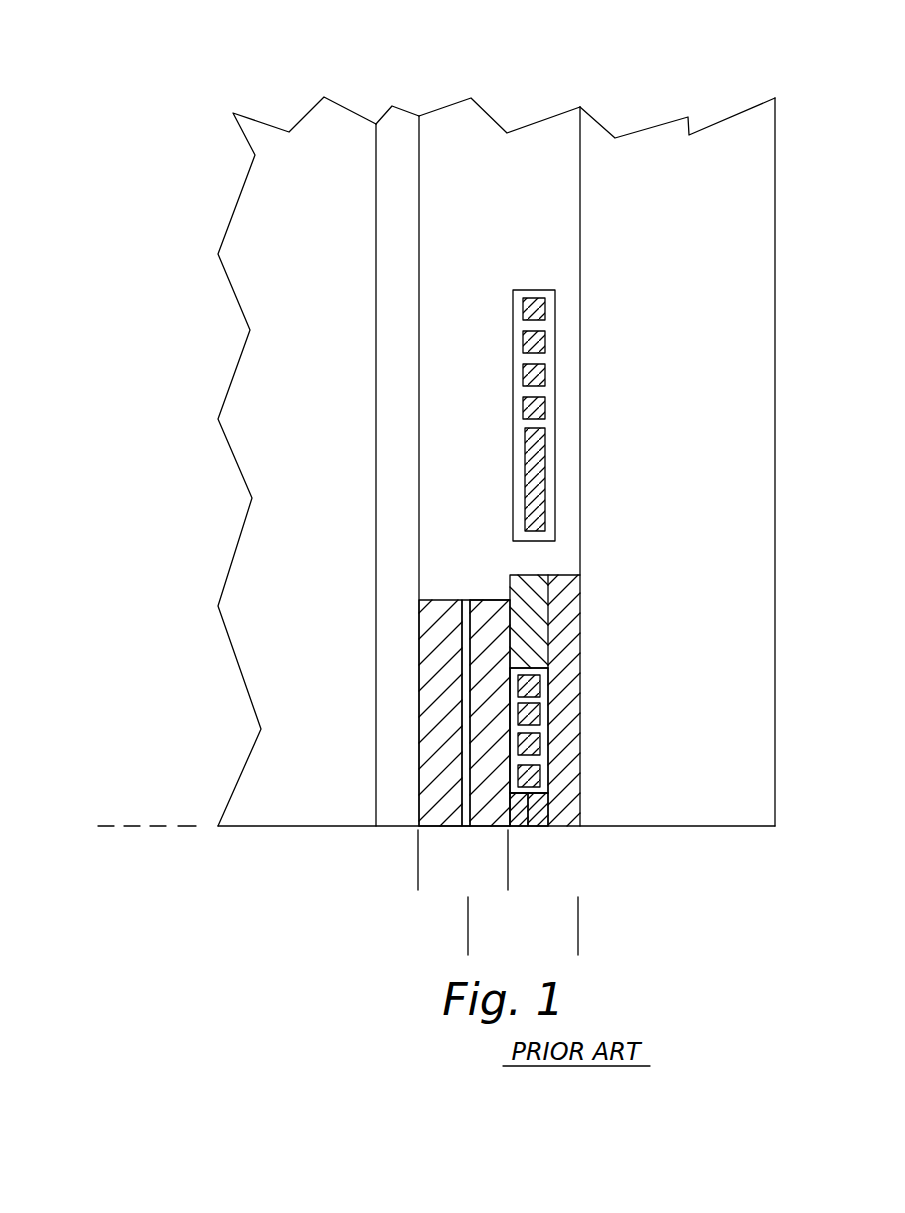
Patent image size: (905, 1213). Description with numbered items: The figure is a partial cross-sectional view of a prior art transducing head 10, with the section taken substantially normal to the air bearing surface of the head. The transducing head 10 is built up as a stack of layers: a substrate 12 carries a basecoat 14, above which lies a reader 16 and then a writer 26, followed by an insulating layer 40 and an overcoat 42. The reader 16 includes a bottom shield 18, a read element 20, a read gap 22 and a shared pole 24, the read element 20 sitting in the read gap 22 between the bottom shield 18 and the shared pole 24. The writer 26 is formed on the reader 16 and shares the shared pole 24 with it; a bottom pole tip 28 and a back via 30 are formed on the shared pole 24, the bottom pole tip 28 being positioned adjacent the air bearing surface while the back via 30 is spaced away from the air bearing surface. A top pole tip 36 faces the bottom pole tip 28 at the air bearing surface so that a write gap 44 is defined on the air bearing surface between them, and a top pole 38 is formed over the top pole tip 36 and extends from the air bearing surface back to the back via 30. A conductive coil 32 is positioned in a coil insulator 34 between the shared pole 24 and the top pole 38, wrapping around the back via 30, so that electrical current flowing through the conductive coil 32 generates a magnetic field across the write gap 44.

The transducing head 10 is at (193, 98).
The substrate 12 is at (296, 544).
The basecoat 14 is at (397, 442).
The reader 16 is at (418, 875).
The bottom shield 18 is at (428, 770).
The read element 20 is at (465, 808).
The read gap 22 is at (465, 685).
The shared pole 24 is at (490, 608).
The writer 26 is at (578, 937).
The bottom pole tip 28 is at (511, 827).
The back via 30 is at (518, 580).
The conductive coil 32 is at (545, 375).
The coil insulator 34 is at (547, 737).
The top pole tip 36 is at (543, 827).
The top pole 38 is at (567, 727).
The insulating layer 40 is at (462, 135).
The overcoat 42 is at (750, 283).
The write gap 44 is at (545, 815).